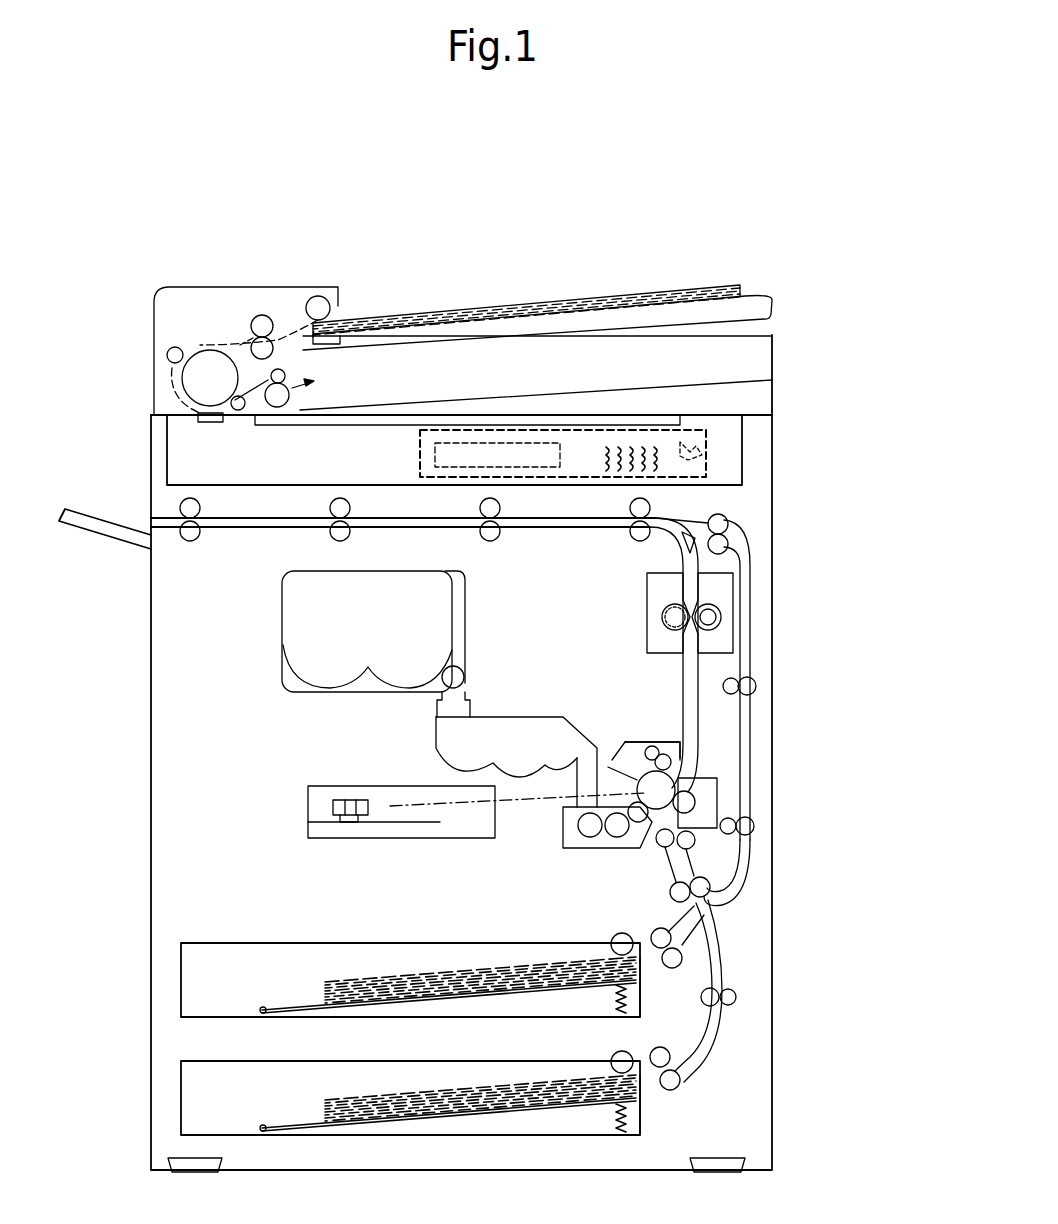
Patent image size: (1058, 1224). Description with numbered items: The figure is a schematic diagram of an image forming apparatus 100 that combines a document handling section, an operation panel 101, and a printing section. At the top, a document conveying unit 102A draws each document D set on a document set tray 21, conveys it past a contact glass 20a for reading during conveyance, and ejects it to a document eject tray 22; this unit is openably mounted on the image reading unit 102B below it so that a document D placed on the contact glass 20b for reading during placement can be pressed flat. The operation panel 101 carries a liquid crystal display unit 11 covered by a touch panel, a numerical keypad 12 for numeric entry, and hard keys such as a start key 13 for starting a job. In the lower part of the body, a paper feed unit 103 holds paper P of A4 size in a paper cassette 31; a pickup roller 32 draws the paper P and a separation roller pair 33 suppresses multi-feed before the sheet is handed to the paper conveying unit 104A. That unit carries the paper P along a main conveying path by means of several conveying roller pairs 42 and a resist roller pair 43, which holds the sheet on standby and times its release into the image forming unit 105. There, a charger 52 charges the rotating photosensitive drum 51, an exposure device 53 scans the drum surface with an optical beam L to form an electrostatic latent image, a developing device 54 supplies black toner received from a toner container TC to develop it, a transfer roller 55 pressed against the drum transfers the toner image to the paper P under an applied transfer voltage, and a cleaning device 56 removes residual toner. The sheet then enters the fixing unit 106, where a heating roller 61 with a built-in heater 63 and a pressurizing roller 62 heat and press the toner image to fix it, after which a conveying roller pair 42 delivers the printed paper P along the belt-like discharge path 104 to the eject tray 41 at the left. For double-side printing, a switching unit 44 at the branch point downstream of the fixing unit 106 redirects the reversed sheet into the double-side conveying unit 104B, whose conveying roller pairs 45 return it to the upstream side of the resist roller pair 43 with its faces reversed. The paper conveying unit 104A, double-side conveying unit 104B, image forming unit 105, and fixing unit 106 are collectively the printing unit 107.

The image forming apparatus 100 is at (178, 280).
The document set tray 21 is at (748, 283).
The document eject tray 22 is at (358, 408).
The contact glass for reading during conveyance 20a is at (208, 424).
The contact glass for reading during placement 20b is at (344, 427).
The liquid crystal display unit 11 is at (537, 443).
The numerical keypad 12 is at (632, 447).
The start key 13 is at (690, 440).
The operation panel 101 is at (712, 456).
The document conveying unit 102A is at (773, 359).
The image reading unit 102B is at (743, 461).
The eject tray 41 is at (118, 524).
The conveying roller pairs 42 is at (190, 543).
The discharge conveyance path 104 is at (539, 530).
The switching unit 44 is at (692, 534).
The conveying roller pairs 45 is at (740, 548).
The double-side conveying unit 104B is at (752, 557).
The fixing unit 106 is at (735, 608).
The printing unit 107 is at (772, 811).
The heater 63 is at (668, 604).
The heating roller 61 is at (660, 618).
The pressurizing roller 62 is at (742, 618).
The charger 52 is at (603, 757).
The cleaning device 56 is at (643, 742).
The image forming unit 105 is at (713, 778).
The transfer roller 55 is at (700, 806).
The exposure device 53 is at (308, 806).
The developing device 54 is at (563, 846).
The photosensitive drum 51 is at (656, 812).
The resist roller pair 43 is at (692, 847).
The paper cassette 31 is at (252, 942).
The pickup roller 32 is at (612, 936).
The separation roller pair 33 is at (670, 969).
The paper conveying unit 104A is at (723, 953).
The paper feed unit 103 is at (645, 1112).
The toner container TC is at (290, 632).
The optical beam L is at (403, 805).
The document D is at (613, 296).
The paper P is at (330, 985).